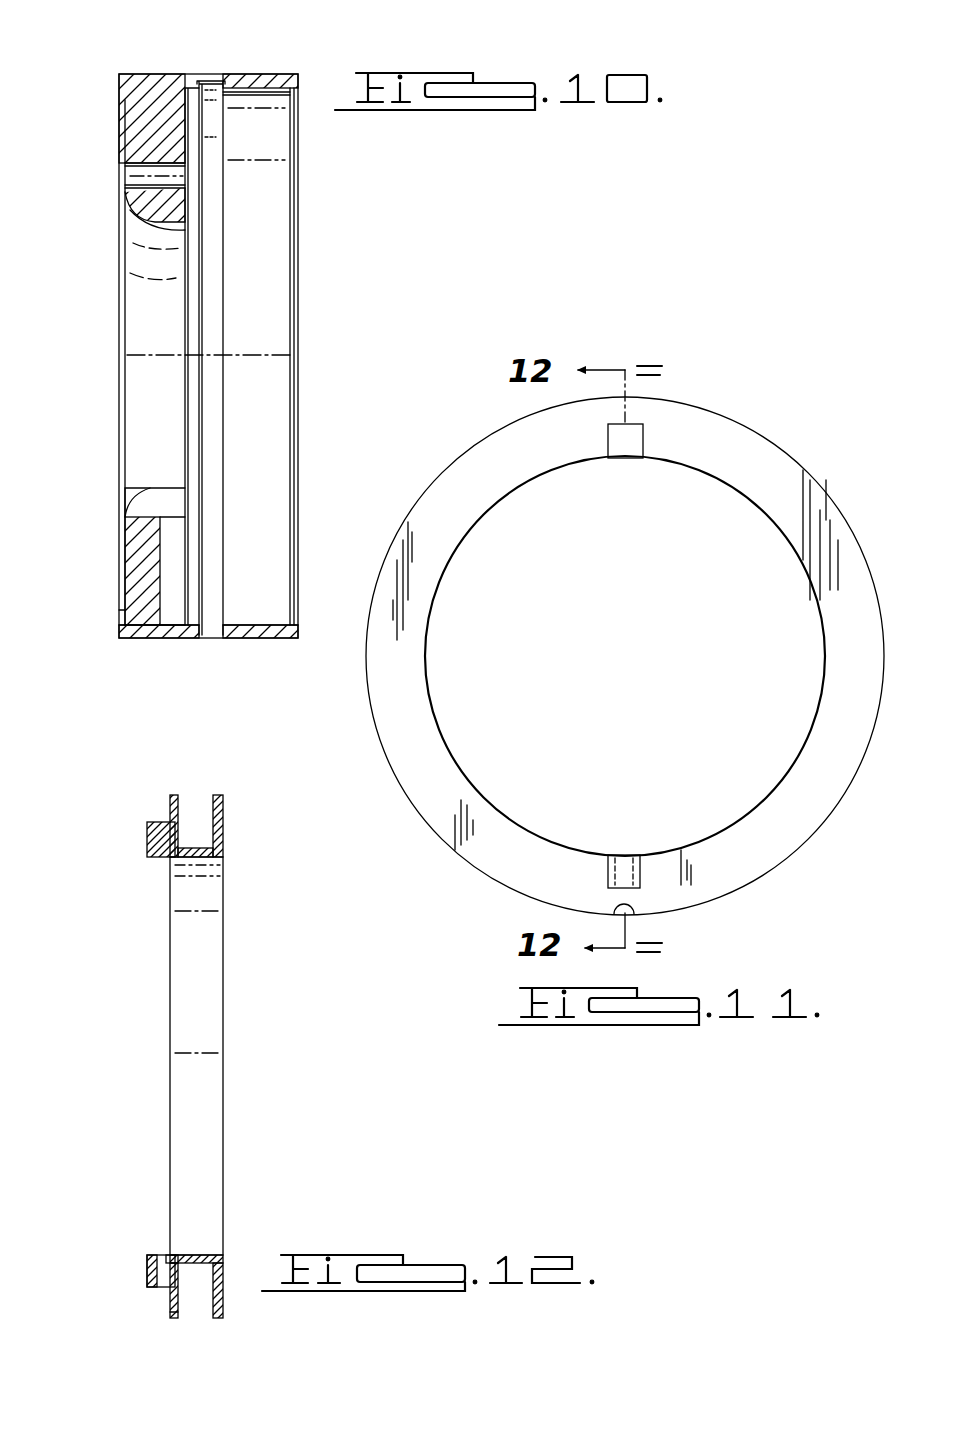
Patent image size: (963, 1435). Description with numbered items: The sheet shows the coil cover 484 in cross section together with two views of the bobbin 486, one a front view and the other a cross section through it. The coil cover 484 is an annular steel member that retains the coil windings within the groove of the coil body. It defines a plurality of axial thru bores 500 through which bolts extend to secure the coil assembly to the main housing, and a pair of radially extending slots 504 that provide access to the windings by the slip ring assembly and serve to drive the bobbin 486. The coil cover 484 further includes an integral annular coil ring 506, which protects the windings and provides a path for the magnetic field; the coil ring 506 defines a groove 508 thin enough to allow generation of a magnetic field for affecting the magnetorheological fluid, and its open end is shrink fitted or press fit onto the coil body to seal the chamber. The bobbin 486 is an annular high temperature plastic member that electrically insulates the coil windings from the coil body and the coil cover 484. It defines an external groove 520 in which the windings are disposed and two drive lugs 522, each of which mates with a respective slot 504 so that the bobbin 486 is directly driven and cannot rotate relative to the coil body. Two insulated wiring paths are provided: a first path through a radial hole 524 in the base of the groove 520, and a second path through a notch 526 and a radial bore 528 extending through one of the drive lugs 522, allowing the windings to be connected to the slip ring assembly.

In FIG. 10, the coil cover 484 is at (164, 56).
In FIG. 11, the bobbin 486 is at (777, 410).
In FIG. 12, the bobbin 486 is at (262, 806).
In FIG. 10, the axial thru bores 500 is at (131, 178).
In FIG. 10, the radially extending slots 504 is at (172, 580).
In FIG. 10, the coil ring 506 is at (263, 74).
In FIG. 10, the groove 508 is at (218, 632).
In FIG. 12, the external groove 520 is at (200, 1285).
In FIG. 11, the drive lugs 522 is at (624, 446).
In FIG. 12, the drive lugs 522 is at (147, 838).
In FIG. 12, the radial hole 524 is at (180, 1258).
In FIG. 11, the notch 526 is at (617, 915).
In FIG. 12, the notch 526 is at (170, 1312).
In FIG. 11, the radial bore 528 is at (622, 855).
In FIG. 12, the radial bore 528 is at (170, 1258).